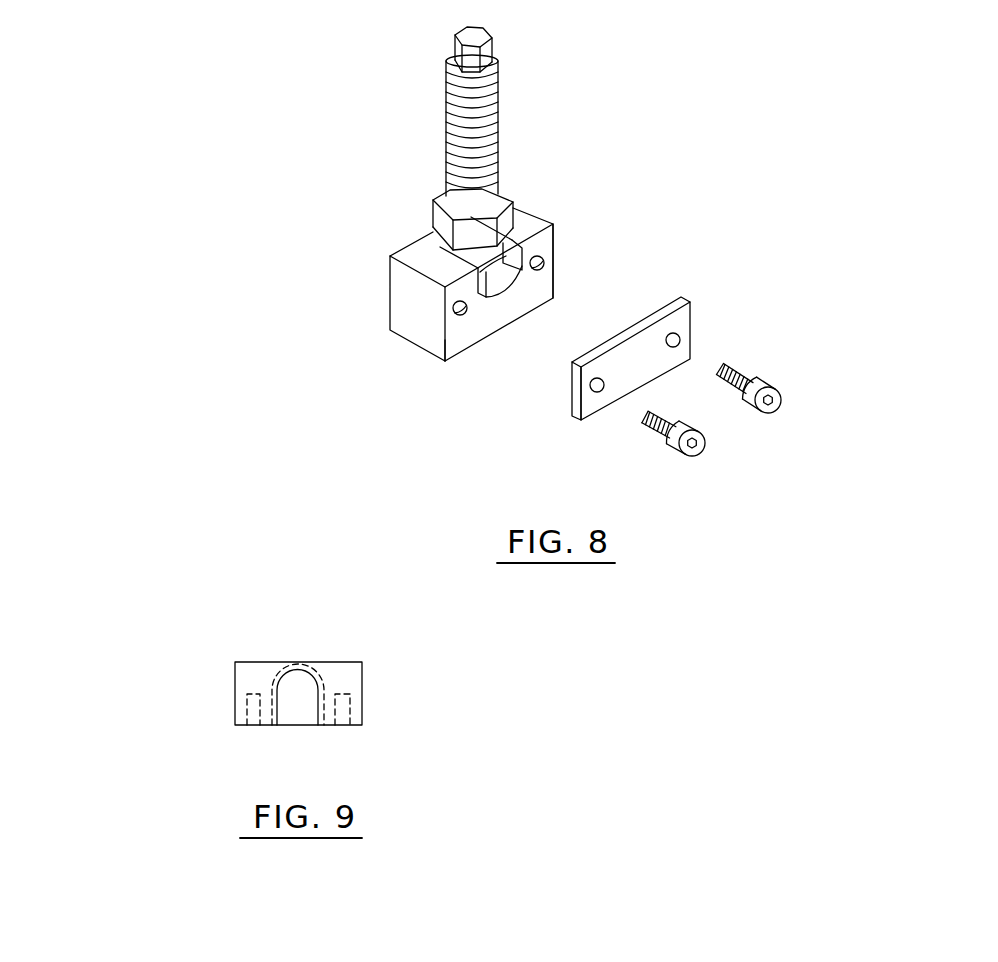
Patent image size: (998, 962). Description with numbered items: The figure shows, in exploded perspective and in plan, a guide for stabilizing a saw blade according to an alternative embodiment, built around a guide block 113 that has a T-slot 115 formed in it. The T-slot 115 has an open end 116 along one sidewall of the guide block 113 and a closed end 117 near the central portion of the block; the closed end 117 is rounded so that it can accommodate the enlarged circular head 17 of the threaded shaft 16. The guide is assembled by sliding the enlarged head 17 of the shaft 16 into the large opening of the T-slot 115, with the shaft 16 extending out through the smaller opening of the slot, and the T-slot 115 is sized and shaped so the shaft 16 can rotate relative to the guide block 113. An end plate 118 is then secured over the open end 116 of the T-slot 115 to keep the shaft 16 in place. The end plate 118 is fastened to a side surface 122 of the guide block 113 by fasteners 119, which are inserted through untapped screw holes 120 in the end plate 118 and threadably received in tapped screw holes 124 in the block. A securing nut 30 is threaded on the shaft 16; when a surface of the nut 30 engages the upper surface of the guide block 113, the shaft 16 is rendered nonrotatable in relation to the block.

In FIG. 8, the threaded shaft 16 is at (442, 133).
In FIG. 8, the securing nut 30 is at (435, 215).
In FIG. 8, the guide block 113 is at (423, 310).
In FIG. 8, the enlarged circular head 17 is at (445, 340).
In FIG. 8, the T-slot 115 is at (517, 272).
In FIG. 9, the T-slot 115 is at (290, 695).
In FIG. 8, the tapped screw holes 124 is at (545, 255).
In FIG. 9, the tapped screw holes 124 is at (386, 737).
In FIG. 8, the side surface 122 is at (639, 241).
In FIG. 8, the end plate 118 is at (680, 317).
In FIG. 8, the untapped screw holes 120 is at (808, 319).
In FIG. 8, the fasteners 119 is at (803, 423).
In FIG. 9, the closed end 117 is at (293, 668).
In FIG. 9, the open end 116 is at (297, 725).